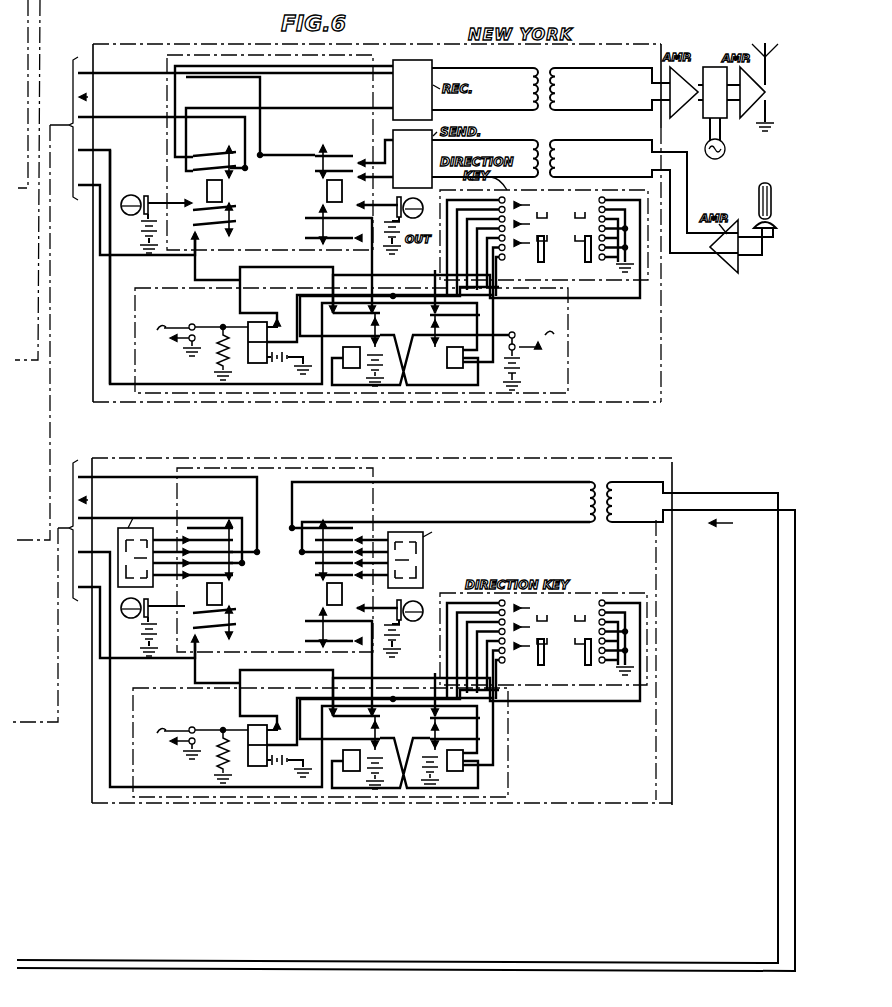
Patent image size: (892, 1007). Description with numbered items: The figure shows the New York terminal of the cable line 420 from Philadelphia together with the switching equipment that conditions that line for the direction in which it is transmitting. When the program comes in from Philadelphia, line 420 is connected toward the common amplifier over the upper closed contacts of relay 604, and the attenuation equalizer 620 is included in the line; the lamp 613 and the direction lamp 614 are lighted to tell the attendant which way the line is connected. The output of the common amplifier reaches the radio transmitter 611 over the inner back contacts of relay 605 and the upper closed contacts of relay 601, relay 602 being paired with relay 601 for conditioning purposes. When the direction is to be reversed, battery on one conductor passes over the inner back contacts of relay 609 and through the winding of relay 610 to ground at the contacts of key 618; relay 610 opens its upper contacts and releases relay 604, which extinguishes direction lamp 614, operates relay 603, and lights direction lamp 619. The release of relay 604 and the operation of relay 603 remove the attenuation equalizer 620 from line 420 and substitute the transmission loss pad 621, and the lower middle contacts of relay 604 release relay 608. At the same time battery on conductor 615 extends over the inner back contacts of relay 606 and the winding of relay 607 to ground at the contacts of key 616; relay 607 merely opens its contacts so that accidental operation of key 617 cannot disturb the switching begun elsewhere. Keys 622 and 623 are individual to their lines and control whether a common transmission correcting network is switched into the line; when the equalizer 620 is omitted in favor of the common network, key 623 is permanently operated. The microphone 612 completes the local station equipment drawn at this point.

The line 420 is at (728, 498).
The relay 601 is at (207, 190).
The relay 602 is at (334, 179).
The relay 603 is at (207, 590).
The relay 604 is at (342, 588).
The relay 605 is at (248, 325).
The relay 606 is at (343, 351).
The relay 607 is at (447, 356).
The relay 608 is at (248, 728).
The relay 609 is at (343, 754).
The relay 610 is at (463, 764).
The radio transmitter 611 is at (712, 67).
The microphone 612 is at (757, 209).
The lamp 613 is at (154, 216).
The direction lamp 614 is at (406, 628).
The conductor 615 is at (118, 268).
The key 616 is at (552, 229).
The key 617 is at (531, 360).
The key 618 is at (552, 632).
The direction lamp 619 is at (148, 627).
The attenuation equalizer 620 is at (423, 552).
The transmission loss pad 621 is at (153, 528).
The key 622 is at (193, 352).
The key 623 is at (193, 755).